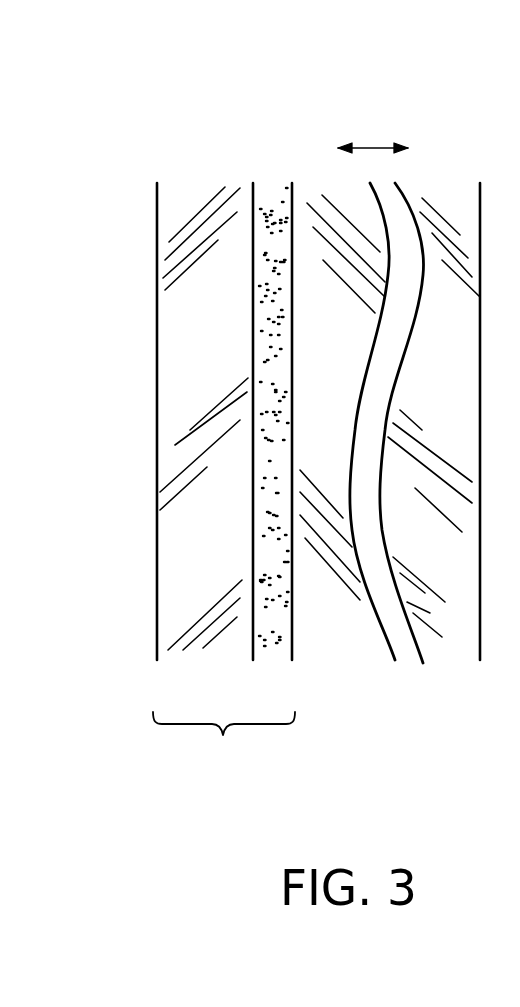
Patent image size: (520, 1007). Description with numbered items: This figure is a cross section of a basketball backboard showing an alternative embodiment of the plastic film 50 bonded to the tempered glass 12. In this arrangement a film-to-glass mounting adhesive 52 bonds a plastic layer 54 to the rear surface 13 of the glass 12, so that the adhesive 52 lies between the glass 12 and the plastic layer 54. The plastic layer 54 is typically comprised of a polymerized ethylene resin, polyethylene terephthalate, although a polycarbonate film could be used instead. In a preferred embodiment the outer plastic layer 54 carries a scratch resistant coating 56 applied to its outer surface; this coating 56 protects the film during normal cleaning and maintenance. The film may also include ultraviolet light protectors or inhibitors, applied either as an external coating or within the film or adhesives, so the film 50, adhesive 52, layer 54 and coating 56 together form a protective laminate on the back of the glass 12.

The tempered glass 12 is at (445, 600).
The rear surface 13 is at (292, 602).
The plastic film 50 is at (224, 746).
The film-to-glass mounting adhesive 52 is at (277, 207).
The plastic layer 54 is at (210, 200).
The scratch resistant coating 56 is at (157, 478).